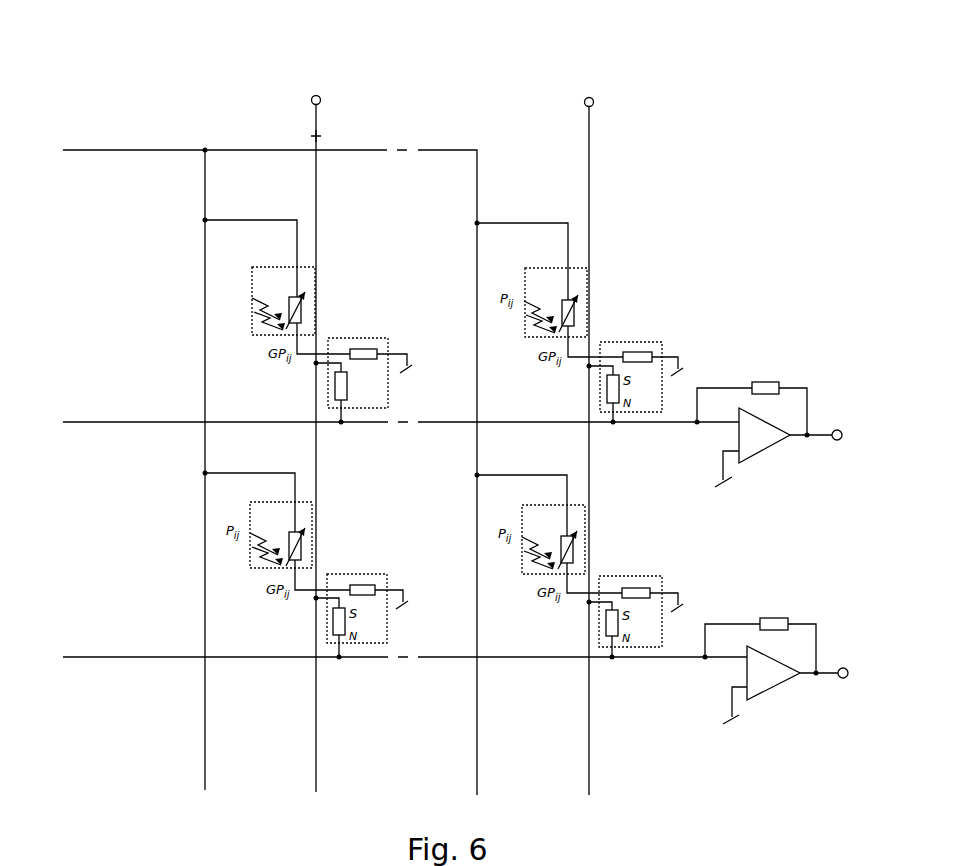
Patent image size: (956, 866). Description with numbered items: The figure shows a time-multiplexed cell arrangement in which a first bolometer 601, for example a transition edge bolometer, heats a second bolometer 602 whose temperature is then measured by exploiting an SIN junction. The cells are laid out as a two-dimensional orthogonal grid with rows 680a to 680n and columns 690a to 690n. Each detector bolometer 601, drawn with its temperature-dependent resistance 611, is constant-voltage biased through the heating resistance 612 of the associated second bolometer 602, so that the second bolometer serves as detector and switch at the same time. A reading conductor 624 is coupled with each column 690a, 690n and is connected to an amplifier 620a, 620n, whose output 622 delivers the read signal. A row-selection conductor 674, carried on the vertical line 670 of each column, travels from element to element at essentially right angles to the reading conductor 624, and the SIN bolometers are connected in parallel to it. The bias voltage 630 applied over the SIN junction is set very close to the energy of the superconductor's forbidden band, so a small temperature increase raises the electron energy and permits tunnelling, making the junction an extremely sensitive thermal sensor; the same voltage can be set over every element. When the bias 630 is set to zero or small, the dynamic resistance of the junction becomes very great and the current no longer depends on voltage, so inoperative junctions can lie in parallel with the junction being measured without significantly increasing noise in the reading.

The bias voltage 630 is at (128, 148).
The reading conductor 624 is at (128, 420).
The row 680a is at (257, 91).
The row 680n is at (543, 116).
The column voltage line 670 is at (312, 99).
The row-selection conductor 674 is at (317, 136).
The column 690a is at (167, 277).
The column 690n is at (167, 560).
The first bolometer 601 is at (291, 312).
The variable resistor 611 is at (300, 299).
The second bolometer 602 is at (384, 350).
The resistor 612 is at (369, 351).
The amplifier 620a is at (756, 348).
The amplifier 620n is at (756, 583).
The amplifier output terminal 622 is at (838, 429).